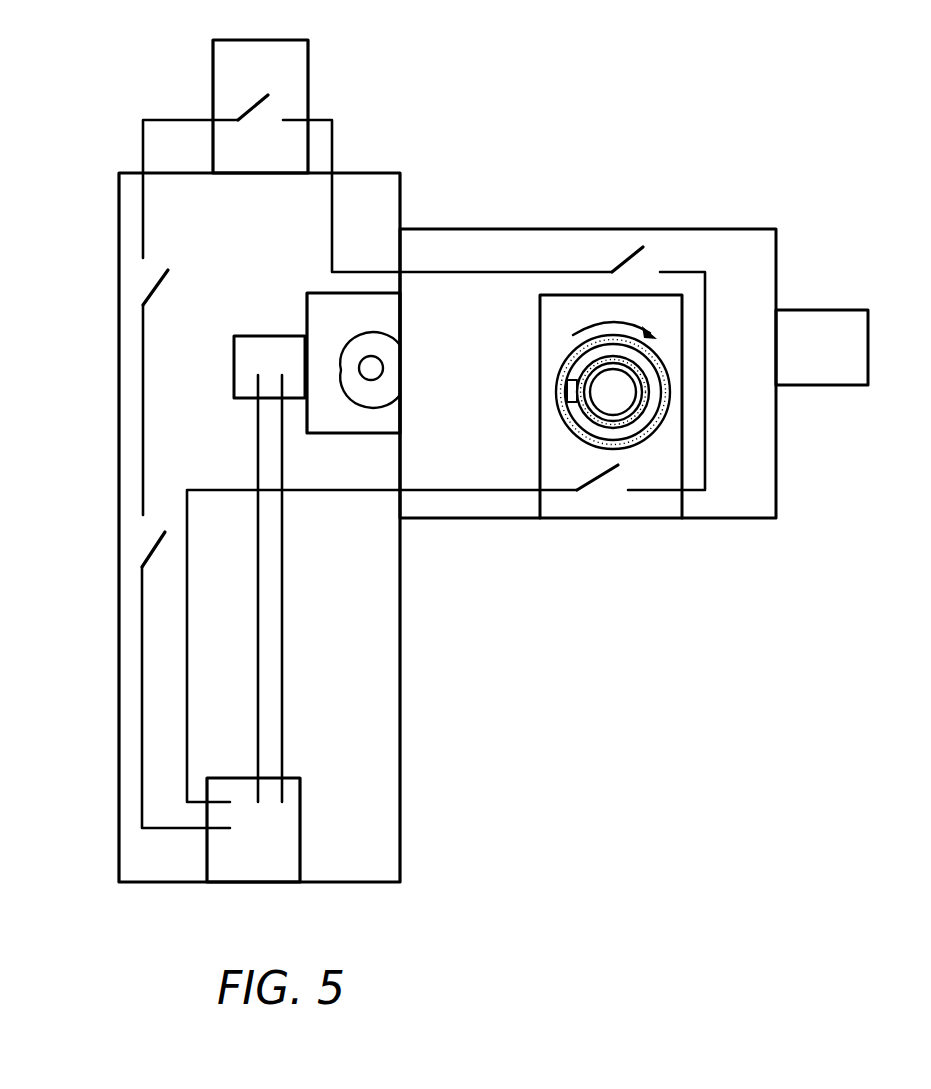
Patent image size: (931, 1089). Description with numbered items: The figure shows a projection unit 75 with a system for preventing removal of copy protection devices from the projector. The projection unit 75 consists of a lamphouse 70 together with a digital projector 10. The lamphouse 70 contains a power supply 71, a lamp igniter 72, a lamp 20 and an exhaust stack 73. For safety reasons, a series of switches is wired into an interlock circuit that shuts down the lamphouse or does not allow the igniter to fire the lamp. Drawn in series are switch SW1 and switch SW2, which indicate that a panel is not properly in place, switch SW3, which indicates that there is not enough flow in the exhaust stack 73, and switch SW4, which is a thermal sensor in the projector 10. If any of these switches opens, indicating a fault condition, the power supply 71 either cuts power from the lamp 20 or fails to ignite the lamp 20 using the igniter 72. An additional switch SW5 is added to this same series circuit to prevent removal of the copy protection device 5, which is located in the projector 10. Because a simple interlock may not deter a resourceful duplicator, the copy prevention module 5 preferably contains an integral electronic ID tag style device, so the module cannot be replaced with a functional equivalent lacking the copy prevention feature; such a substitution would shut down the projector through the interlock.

The copy protection device 5 is at (565, 422).
The drive unit housing 10 is at (727, 229).
The lamp 20 is at (348, 357).
The lamphouse 70 is at (117, 755).
The power supply 71 is at (287, 820).
The lamp igniter 72 is at (262, 343).
The exhaust stack 73 is at (298, 58).
The projection unit 75 is at (612, 702).
The switch SW1 is at (153, 542).
The switch SW2 is at (153, 287).
The switch SW3 is at (247, 108).
The switch SW4 is at (623, 257).
The switch SW5 is at (600, 480).